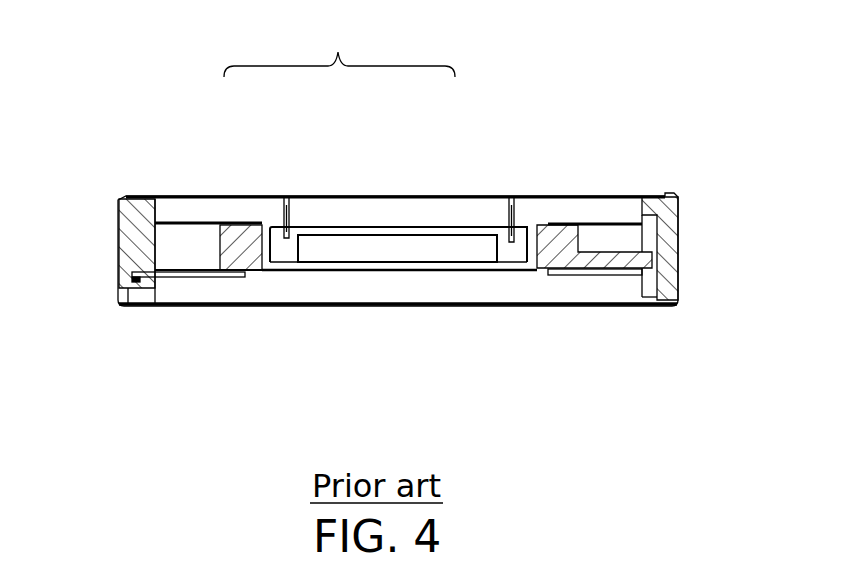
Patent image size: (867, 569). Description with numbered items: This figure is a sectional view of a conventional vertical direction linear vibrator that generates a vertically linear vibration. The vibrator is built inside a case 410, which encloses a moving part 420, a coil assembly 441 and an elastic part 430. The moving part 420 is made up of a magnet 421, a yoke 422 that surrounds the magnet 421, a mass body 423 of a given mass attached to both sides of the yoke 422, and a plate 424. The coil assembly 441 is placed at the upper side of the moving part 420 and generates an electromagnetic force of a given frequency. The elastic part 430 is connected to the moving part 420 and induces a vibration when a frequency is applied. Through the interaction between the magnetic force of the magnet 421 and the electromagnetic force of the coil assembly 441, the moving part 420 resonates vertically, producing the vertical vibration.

The case 410 is at (127, 218).
The moving part 420 is at (339, 46).
The magnet 421 is at (348, 243).
The yoke 422 is at (373, 267).
The mass body 423 is at (255, 224).
The plate 424 is at (417, 227).
The elastic part 430 is at (193, 225).
The coil assembly 441 is at (517, 203).